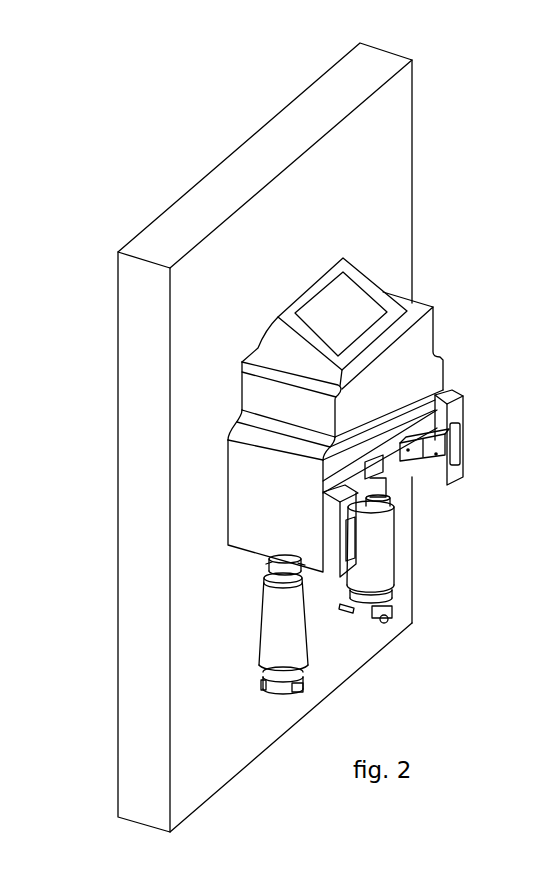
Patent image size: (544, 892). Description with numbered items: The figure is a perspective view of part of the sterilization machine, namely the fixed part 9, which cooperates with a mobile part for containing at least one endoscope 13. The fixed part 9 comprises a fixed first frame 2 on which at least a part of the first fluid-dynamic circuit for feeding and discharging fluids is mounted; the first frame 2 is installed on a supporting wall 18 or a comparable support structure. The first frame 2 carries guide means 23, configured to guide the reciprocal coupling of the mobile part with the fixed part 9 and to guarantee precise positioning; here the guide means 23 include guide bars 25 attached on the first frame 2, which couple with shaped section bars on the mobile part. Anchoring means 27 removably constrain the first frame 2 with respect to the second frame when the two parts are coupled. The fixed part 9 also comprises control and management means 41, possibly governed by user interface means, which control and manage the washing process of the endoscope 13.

The first frame 2 is at (249, 351).
The fixed part 9 is at (374, 461).
The endoscope 13 is at (391, 549).
The supporting wall 18 is at (141, 377).
The guide means 23 is at (468, 455).
The guide bar 25 is at (436, 456).
The anchoring means 27 is at (426, 436).
The control and management means 41 is at (358, 296).